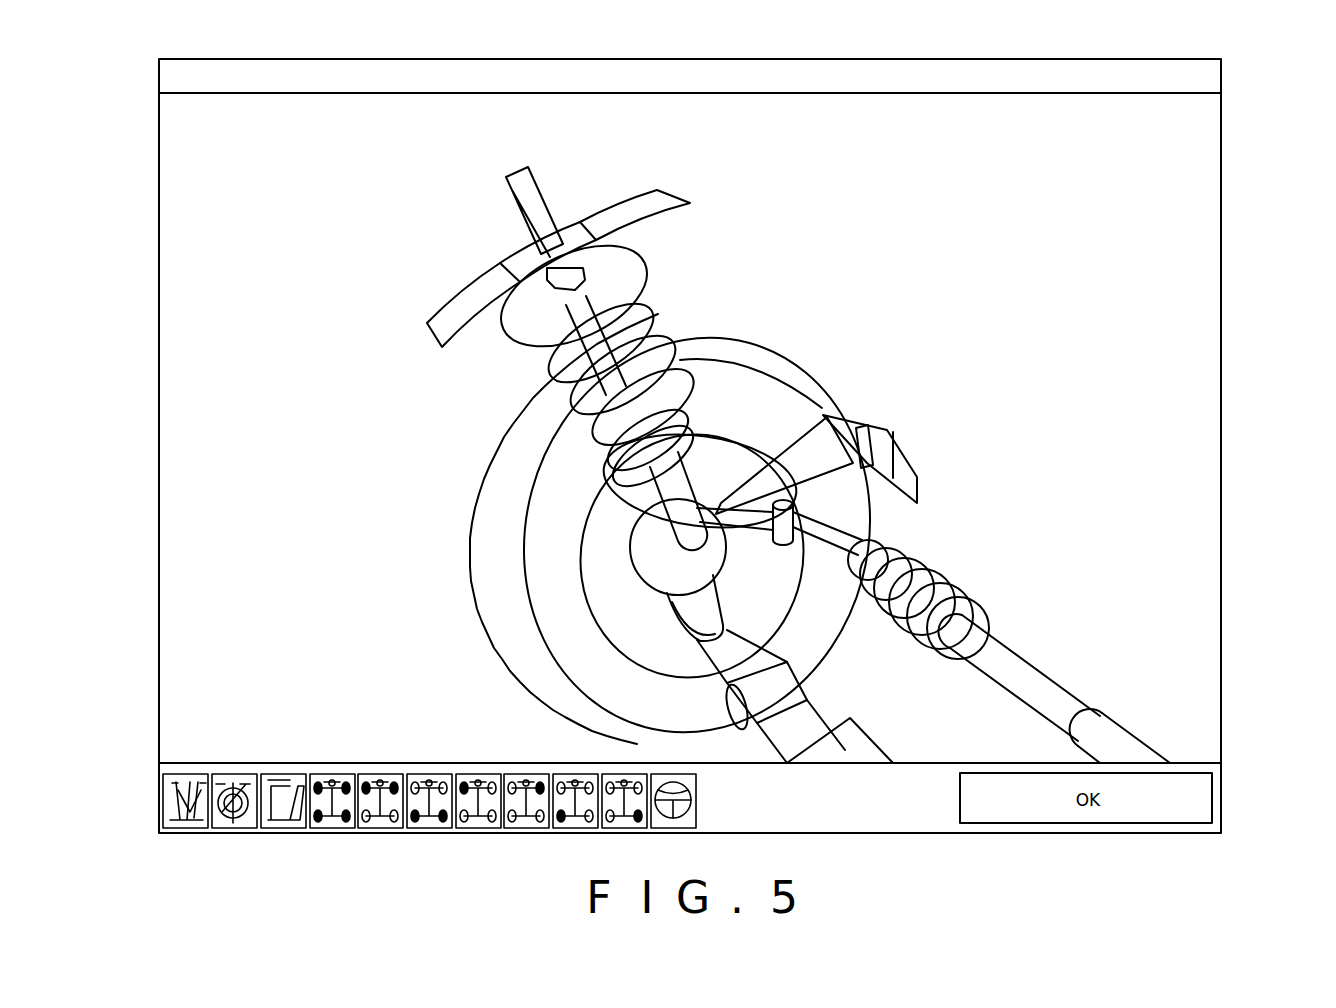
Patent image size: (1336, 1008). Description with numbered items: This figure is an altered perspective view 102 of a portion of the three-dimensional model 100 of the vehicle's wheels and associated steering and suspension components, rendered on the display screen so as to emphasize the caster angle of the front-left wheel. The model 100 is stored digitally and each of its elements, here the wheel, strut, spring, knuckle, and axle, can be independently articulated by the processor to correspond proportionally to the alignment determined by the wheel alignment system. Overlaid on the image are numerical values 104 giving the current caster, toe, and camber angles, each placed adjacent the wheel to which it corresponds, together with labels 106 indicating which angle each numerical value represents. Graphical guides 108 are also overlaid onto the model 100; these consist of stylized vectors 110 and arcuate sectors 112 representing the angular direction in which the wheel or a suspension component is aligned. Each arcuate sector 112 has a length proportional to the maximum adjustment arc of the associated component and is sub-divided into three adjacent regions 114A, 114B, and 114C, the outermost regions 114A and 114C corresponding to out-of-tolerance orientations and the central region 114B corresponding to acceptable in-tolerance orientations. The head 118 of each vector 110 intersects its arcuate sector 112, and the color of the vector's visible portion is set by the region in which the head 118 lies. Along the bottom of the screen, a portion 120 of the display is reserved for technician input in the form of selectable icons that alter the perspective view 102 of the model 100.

The three-dimensional model 100 is at (1080, 680).
The perspective view 102 is at (987, 353).
The numerical values 104 is at (845, 157).
The labels 106 is at (775, 205).
The graphical guides 108 is at (597, 162).
The stylized vector 110 is at (516, 222).
The arcuate sector 112 is at (660, 346).
The outermost region 114A is at (460, 313).
The central region 114B is at (587, 233).
The outermost region 114C is at (640, 210).
The vector head 118 is at (527, 170).
The portion of the display screen 120 is at (153, 800).